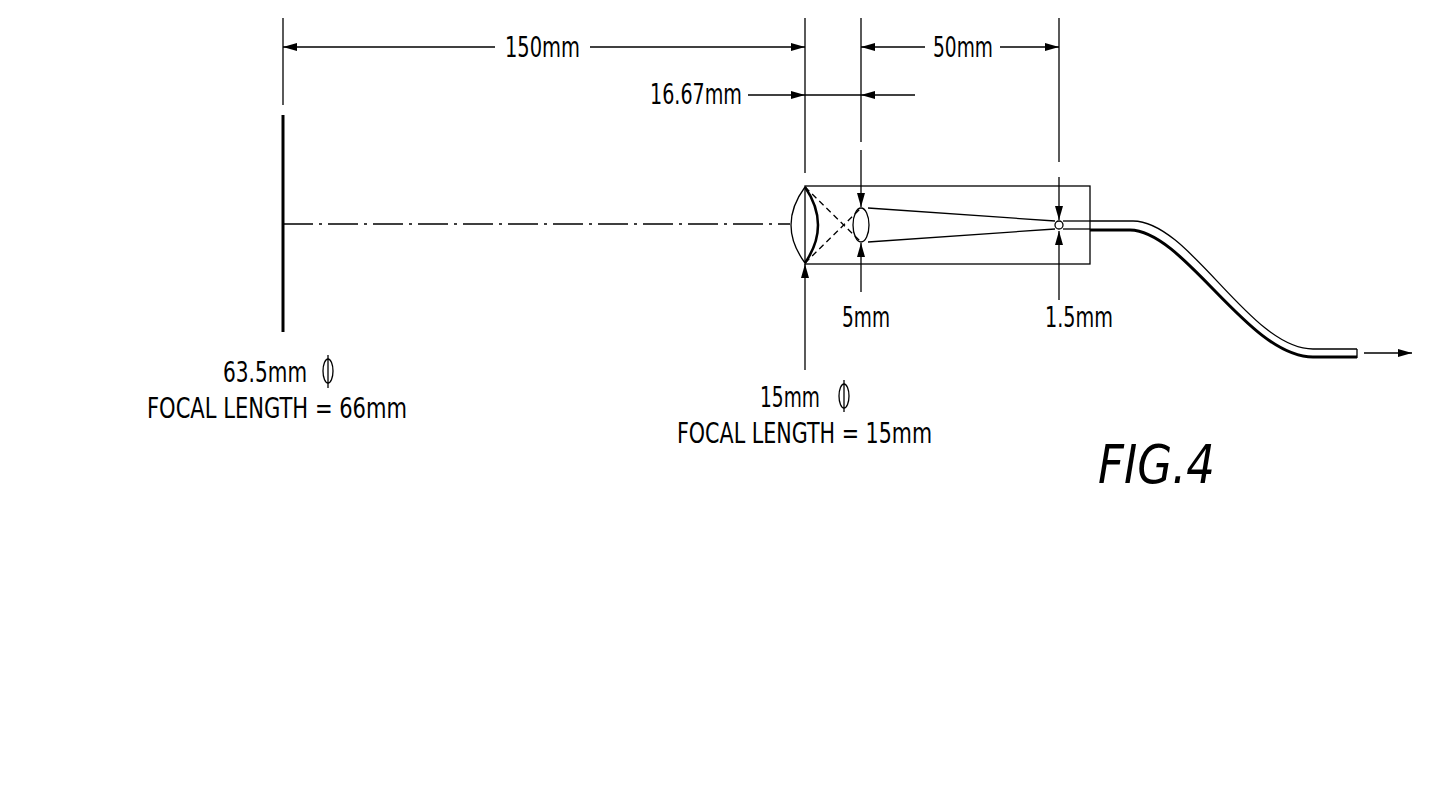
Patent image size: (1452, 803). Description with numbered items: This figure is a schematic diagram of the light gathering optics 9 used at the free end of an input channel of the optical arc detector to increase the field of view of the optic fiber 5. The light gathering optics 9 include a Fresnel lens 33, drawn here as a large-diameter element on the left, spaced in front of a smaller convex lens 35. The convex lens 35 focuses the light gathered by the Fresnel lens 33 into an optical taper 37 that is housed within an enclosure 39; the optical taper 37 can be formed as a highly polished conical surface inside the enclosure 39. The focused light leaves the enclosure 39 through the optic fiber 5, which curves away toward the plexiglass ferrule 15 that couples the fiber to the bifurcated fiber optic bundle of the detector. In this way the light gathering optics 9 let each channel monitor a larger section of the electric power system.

The light gathering optics 9 is at (1183, 48).
The Fresnel lens 33 is at (284, 290).
The convex lens 35 is at (793, 240).
The optical taper 37 is at (913, 222).
The enclosure 39 is at (1093, 213).
The optic fiber 5 is at (1224, 274).
The plexiglass ferrule 15 is at (1405, 355).